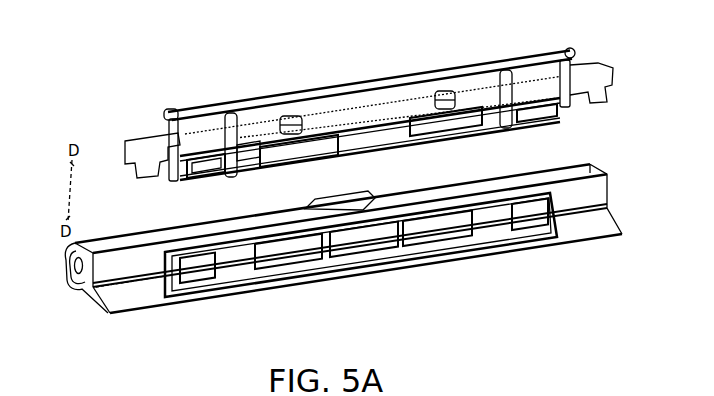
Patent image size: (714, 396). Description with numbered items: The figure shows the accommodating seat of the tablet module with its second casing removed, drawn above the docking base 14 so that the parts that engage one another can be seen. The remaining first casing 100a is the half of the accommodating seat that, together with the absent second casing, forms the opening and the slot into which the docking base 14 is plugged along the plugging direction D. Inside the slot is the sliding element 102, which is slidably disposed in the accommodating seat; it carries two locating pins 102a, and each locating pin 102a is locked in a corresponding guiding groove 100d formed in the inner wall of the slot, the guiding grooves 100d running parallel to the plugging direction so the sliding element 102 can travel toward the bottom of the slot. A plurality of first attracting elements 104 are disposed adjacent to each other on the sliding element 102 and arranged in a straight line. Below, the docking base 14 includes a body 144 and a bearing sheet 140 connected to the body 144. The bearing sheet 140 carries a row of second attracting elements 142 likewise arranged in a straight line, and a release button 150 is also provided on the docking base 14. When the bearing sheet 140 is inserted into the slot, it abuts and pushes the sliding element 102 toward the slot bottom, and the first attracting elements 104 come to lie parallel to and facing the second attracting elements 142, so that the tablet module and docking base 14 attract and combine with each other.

The docking base 14 is at (550, 253).
The first casing 100a is at (447, 68).
The guiding groove 100d is at (219, 120).
The sliding element 102 is at (180, 183).
The locating pin 102a is at (235, 168).
The first attracting element 104 is at (352, 142).
The bearing sheet 140 is at (237, 270).
The second attracting element 142 is at (358, 250).
The body 144 is at (80, 282).
The release button 150 is at (333, 201).